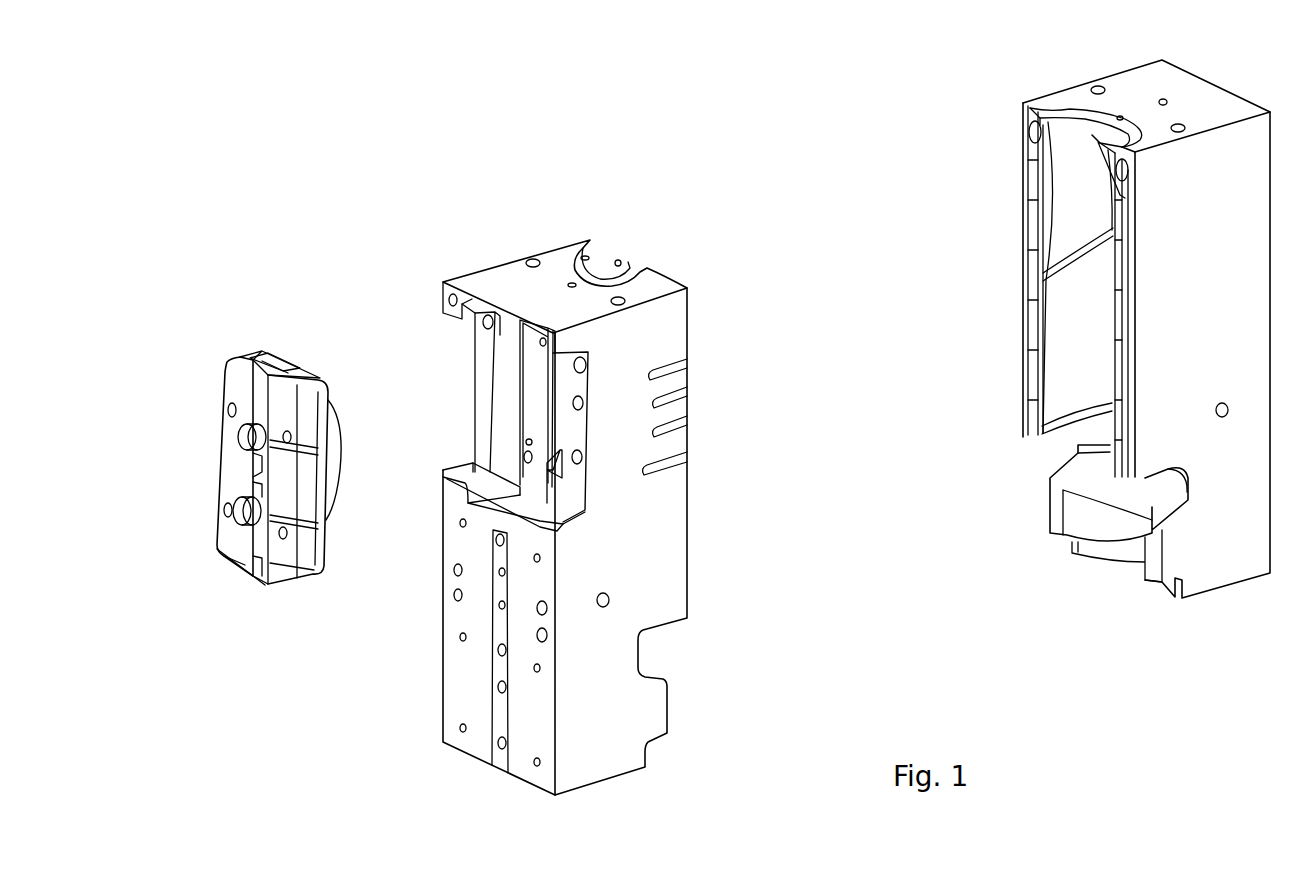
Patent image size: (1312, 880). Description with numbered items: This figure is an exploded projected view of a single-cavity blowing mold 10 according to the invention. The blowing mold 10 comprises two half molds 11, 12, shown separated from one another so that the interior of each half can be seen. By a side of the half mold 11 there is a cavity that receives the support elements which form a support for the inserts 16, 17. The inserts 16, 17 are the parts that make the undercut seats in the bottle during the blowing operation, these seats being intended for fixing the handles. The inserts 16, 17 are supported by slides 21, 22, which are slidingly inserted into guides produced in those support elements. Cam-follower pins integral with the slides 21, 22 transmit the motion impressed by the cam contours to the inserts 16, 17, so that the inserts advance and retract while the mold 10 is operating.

The blowing mold 10 is at (578, 150).
The half mold 11 is at (490, 287).
The half mold 12 is at (1200, 97).
The insert 16 is at (328, 403).
The insert 17 is at (330, 513).
The slide 21 is at (262, 362).
The slide 22 is at (259, 560).